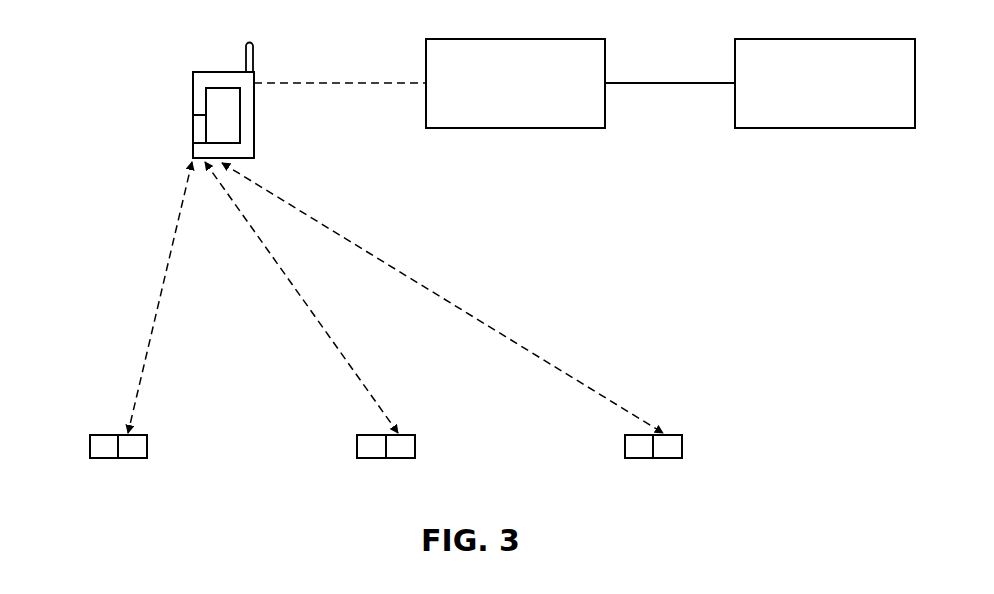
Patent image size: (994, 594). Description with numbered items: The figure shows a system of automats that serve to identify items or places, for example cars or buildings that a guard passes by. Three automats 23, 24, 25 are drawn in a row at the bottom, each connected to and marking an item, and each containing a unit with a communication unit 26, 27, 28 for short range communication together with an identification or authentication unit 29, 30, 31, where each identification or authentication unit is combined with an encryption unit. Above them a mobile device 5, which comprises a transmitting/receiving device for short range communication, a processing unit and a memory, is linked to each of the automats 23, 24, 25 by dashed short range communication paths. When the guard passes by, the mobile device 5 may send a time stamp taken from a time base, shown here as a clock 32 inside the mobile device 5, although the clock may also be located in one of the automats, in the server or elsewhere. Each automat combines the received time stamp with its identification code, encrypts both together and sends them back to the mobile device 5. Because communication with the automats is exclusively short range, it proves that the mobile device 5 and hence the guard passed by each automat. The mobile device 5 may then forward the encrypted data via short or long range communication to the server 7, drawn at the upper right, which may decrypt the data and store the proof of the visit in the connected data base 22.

The mobile device 5 is at (254, 115).
The clock 32 is at (198, 128).
The server 7 is at (467, 38).
The data base 22 is at (845, 38).
The automat 23 is at (134, 454).
The automat 24 is at (400, 455).
The automat 25 is at (666, 455).
The communication unit 26 is at (147, 447).
The communication unit 27 is at (415, 447).
The communication unit 28 is at (682, 447).
The identification or authentication unit 29 is at (102, 433).
The identification or authentication unit 30 is at (368, 433).
The identification or authentication unit 31 is at (633, 433).